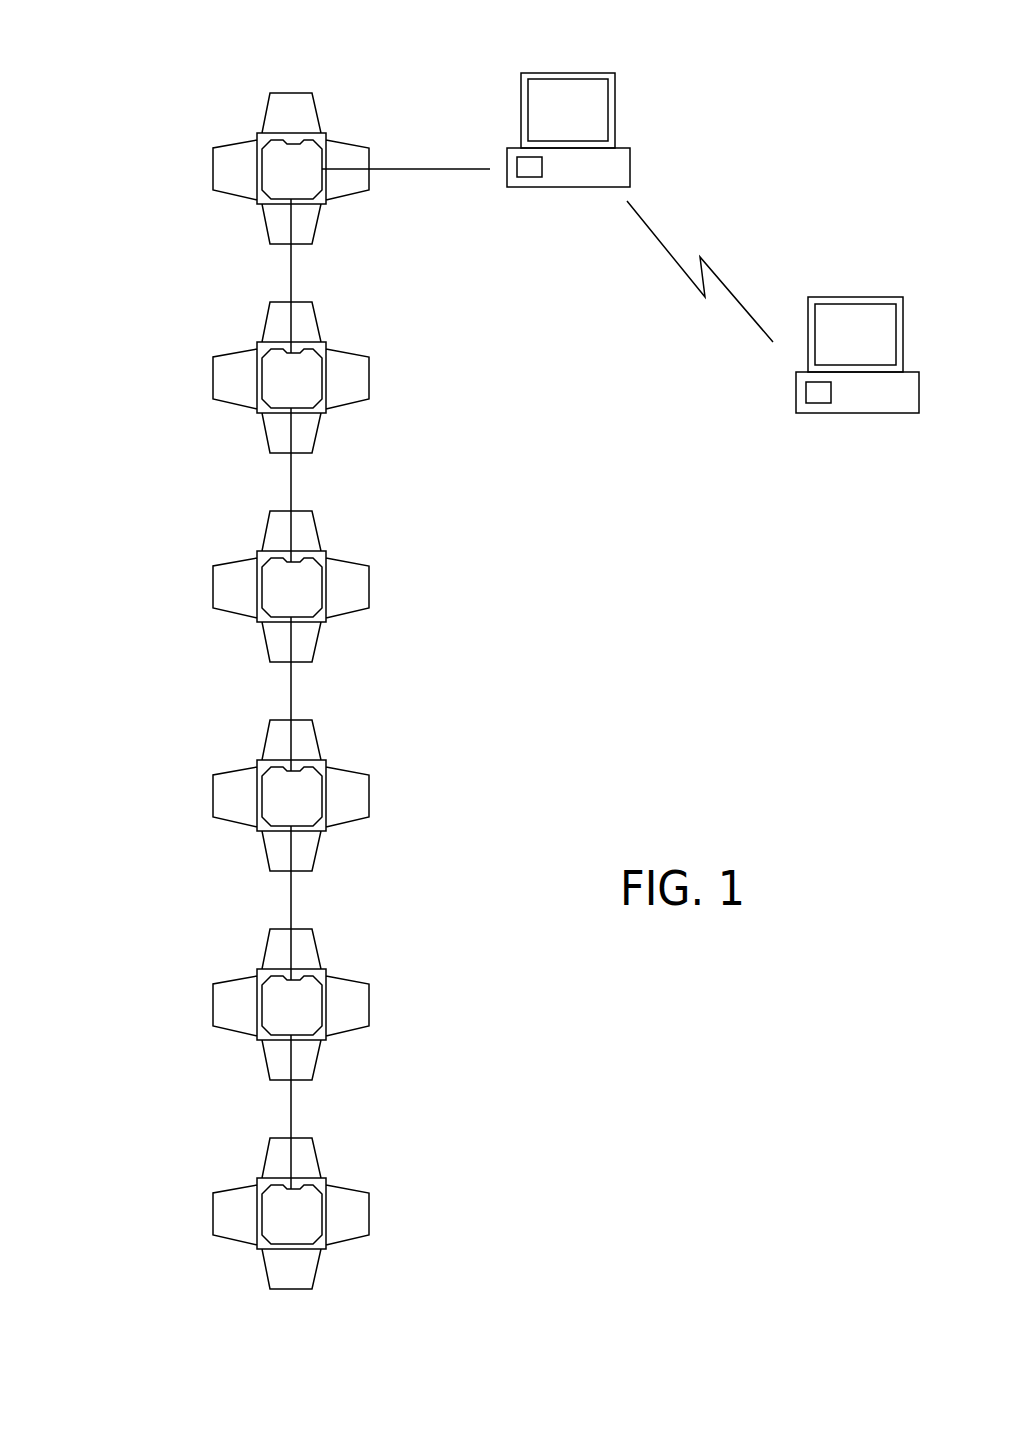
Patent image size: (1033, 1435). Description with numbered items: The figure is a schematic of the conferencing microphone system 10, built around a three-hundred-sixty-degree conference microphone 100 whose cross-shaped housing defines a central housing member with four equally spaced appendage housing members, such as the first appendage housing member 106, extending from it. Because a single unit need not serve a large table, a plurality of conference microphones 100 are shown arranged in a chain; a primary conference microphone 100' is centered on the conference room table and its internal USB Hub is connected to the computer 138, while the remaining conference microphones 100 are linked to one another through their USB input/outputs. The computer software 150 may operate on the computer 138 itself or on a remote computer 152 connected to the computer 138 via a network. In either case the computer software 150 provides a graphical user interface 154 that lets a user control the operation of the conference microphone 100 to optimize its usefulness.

The conferencing microphone system 10 is at (142, 617).
The primary conference microphone 100' is at (258, 157).
The conference microphone 100 is at (259, 785).
The first appendage housing member 106 is at (292, 267).
The computer 138 is at (615, 100).
The computer software 150 is at (529, 177).
The remote computer 152 is at (892, 297).
The graphical user interface 154 is at (536, 102).